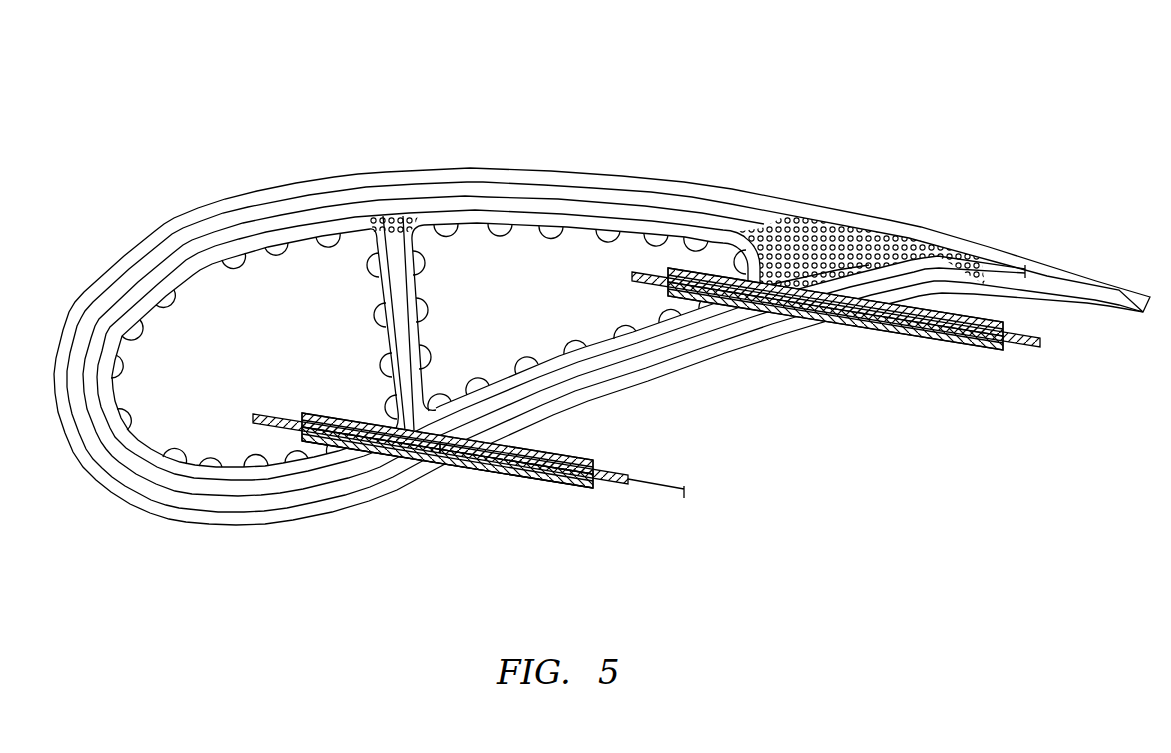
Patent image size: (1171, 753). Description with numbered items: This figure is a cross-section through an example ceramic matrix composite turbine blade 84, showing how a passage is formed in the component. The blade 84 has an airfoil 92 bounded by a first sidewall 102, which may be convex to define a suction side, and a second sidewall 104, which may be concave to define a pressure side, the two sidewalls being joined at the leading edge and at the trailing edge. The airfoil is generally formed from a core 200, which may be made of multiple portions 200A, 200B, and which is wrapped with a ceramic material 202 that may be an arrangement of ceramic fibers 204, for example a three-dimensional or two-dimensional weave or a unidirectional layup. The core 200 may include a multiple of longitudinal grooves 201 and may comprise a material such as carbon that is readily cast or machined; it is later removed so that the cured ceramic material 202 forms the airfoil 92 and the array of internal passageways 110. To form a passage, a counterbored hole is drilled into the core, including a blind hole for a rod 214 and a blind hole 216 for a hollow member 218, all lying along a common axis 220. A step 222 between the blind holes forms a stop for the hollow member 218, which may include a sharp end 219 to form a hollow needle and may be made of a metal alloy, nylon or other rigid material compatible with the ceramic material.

The blade 84 is at (849, 118).
The airfoil 92 is at (842, 207).
The first sidewall 102 is at (446, 156).
The second sidewall 104 is at (648, 382).
The internal passageways 110 is at (520, 257).
The core 200 is at (234, 306).
The core portion 200A is at (220, 381).
The core portion 200B is at (540, 314).
The longitudinal grooves 201 is at (314, 240).
The ceramic material 202 is at (455, 203).
The ceramic fibers 204 is at (660, 206).
The rod 214 is at (604, 486).
The blind hole 216 is at (300, 443).
The hollow member 218 is at (505, 478).
The sharp end 219 is at (545, 486).
The common axis 220 is at (681, 499).
The step 222 is at (268, 430).